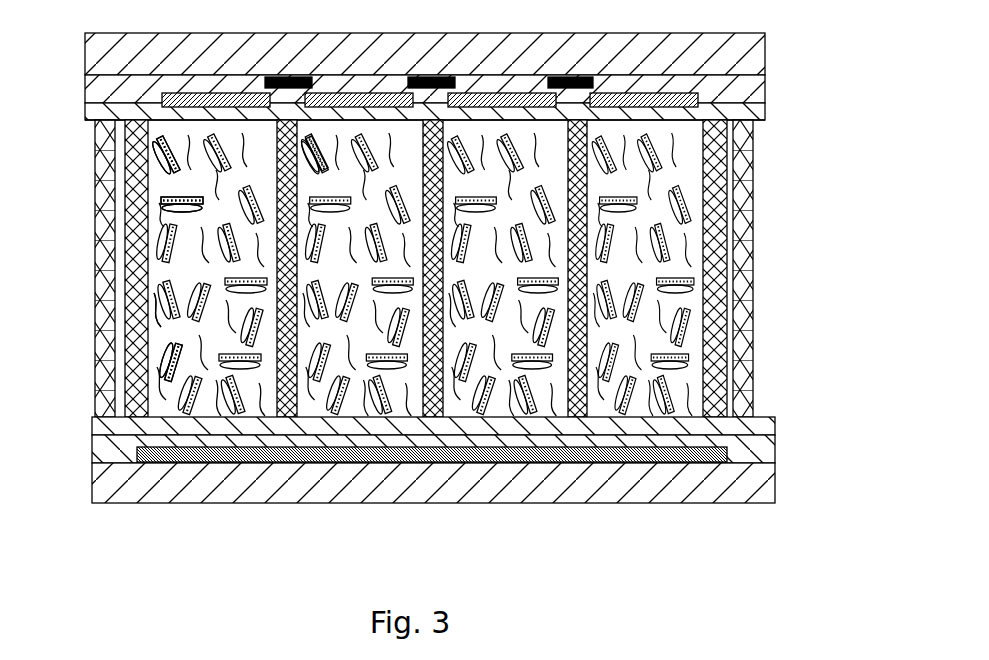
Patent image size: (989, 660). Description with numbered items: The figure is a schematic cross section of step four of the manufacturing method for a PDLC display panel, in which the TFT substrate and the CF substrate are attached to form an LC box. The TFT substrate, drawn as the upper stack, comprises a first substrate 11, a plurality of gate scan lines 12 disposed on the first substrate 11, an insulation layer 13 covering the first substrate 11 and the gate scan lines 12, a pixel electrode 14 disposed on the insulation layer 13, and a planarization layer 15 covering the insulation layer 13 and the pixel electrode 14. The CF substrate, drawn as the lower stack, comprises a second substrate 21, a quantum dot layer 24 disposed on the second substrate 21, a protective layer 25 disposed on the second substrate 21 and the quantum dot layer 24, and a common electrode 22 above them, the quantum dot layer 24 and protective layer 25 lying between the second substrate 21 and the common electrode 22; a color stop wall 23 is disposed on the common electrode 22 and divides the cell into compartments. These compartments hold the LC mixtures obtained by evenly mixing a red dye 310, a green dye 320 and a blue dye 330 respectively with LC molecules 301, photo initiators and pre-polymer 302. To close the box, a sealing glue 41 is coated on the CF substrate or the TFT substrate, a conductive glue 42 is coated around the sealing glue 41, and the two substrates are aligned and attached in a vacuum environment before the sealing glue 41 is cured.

The first substrate 11 is at (707, 50).
The gate scan lines 12 is at (617, 73).
The insulation layer 13 is at (717, 87).
The pixel electrode 14 is at (698, 102).
The planarization layer 15 is at (717, 115).
The second substrate 21 is at (715, 477).
The common electrode 22 is at (733, 423).
The color stop wall 23 is at (588, 363).
The quantum dot layer 24 is at (715, 455).
The protective layer 25 is at (735, 447).
The sealing glue 41 is at (705, 283).
The conductive glue 42 is at (743, 208).
The LC molecules 301 is at (172, 358).
The pre-polymer 302 is at (160, 312).
The red dye 310 is at (168, 172).
The green dye 320 is at (328, 149).
The blue dye 330 is at (457, 197).